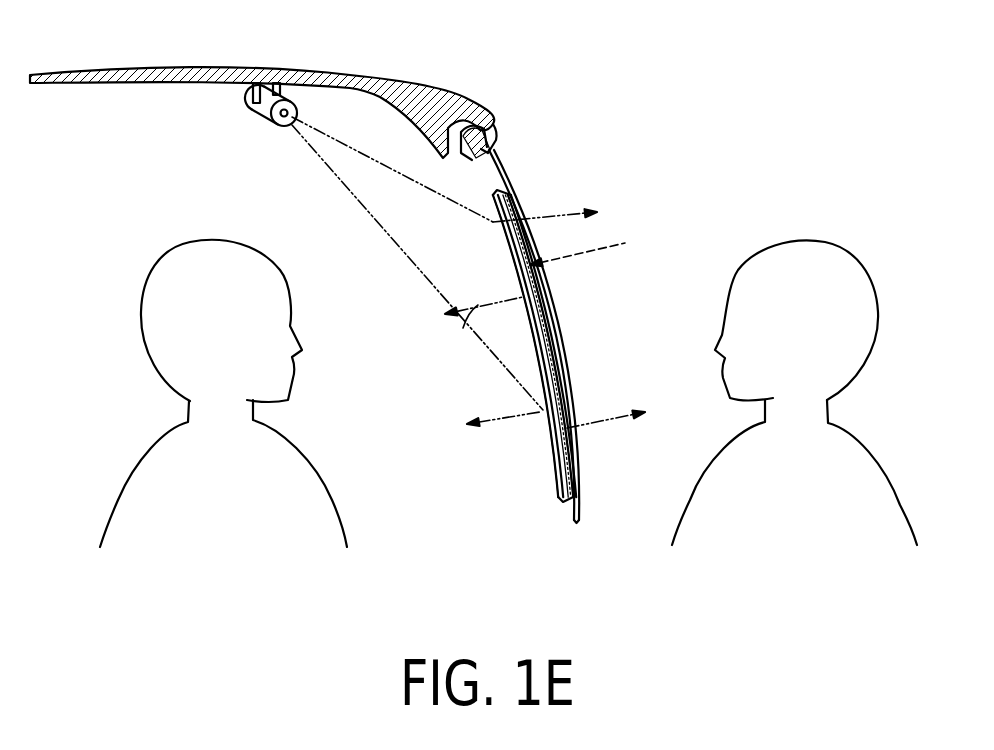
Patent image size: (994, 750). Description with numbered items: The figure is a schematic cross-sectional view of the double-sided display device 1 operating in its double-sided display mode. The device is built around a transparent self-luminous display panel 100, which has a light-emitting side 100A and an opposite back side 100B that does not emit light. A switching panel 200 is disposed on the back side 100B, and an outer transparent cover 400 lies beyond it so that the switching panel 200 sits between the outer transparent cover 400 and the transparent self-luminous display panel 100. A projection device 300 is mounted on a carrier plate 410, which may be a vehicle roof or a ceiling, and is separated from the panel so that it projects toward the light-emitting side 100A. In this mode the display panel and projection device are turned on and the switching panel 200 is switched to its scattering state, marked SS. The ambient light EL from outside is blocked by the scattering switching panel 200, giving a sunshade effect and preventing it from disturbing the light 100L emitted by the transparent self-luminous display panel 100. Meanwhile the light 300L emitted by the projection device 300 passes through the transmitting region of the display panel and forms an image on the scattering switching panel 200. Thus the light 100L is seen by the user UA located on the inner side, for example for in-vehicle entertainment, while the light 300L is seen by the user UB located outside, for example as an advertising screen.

The double-sided display device 1 is at (572, 122).
The carrier plate 410 is at (433, 93).
The projection device 300 is at (262, 110).
The light emitted by the projection device 300L is at (562, 220).
The ambient light EL is at (603, 244).
The user UA is at (152, 306).
The user UB is at (808, 255).
The light emitted by the transparent self-luminous display panel 100L is at (462, 330).
The transparent self-luminous display panel 100 is at (558, 463).
The light-emitting side 100A is at (536, 358).
The back side 100B is at (556, 343).
The outer transparent cover 400 is at (580, 462).
The switching panel 200 is at (563, 497).